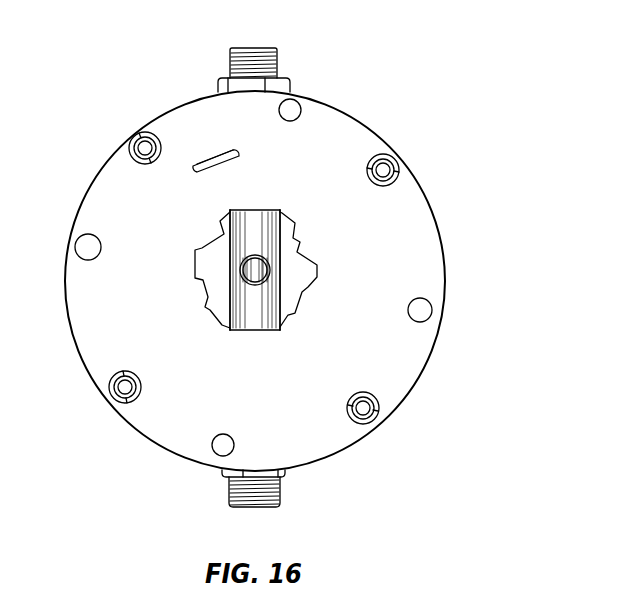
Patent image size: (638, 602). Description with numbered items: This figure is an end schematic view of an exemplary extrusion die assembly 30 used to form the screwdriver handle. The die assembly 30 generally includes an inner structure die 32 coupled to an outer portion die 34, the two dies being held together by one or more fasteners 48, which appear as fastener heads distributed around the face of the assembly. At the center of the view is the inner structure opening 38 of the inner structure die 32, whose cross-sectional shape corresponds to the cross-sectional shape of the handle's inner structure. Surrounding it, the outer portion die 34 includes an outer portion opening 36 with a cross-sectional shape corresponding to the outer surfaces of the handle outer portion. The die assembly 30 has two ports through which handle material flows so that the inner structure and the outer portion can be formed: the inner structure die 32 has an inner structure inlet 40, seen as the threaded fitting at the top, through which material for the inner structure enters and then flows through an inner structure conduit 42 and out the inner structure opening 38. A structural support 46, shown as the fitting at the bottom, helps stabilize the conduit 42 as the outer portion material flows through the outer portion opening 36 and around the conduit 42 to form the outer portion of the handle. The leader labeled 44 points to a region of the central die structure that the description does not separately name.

The die assembly 30 is at (509, 72).
The inner structure die 32 is at (318, 460).
The outer portion die 34 is at (405, 345).
The outer portion opening 36 is at (300, 230).
The inner structure opening 38 is at (255, 270).
The inner structure inlet 40 is at (255, 48).
The inner structure conduit 42 is at (233, 292).
The gear body 44 is at (297, 273).
The structural support 46 is at (281, 497).
The fasteners 48 is at (366, 409).